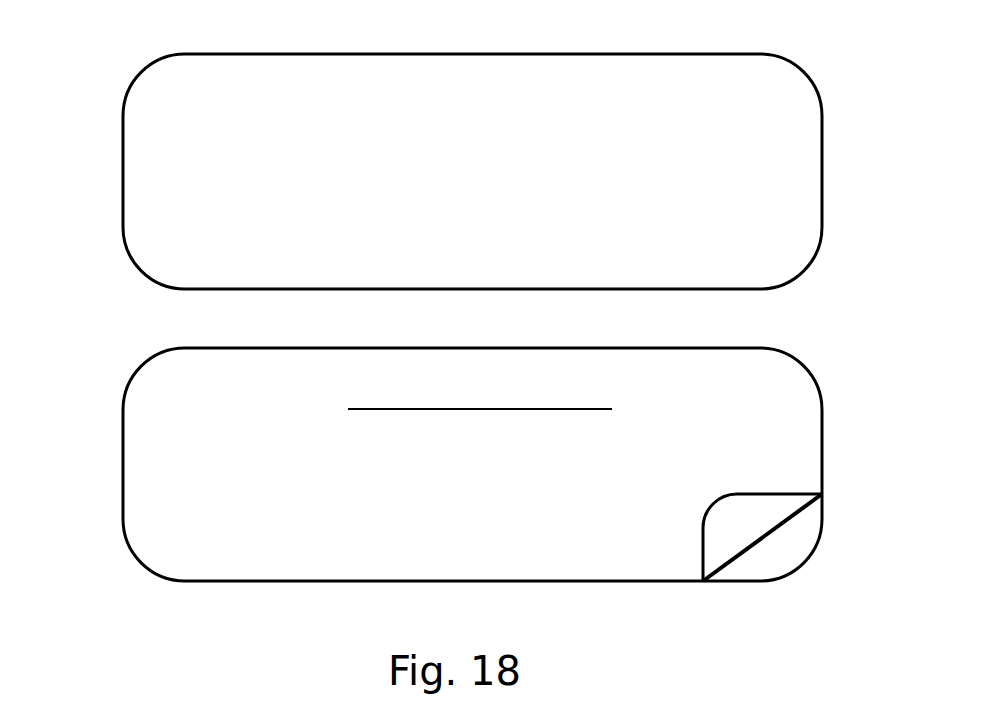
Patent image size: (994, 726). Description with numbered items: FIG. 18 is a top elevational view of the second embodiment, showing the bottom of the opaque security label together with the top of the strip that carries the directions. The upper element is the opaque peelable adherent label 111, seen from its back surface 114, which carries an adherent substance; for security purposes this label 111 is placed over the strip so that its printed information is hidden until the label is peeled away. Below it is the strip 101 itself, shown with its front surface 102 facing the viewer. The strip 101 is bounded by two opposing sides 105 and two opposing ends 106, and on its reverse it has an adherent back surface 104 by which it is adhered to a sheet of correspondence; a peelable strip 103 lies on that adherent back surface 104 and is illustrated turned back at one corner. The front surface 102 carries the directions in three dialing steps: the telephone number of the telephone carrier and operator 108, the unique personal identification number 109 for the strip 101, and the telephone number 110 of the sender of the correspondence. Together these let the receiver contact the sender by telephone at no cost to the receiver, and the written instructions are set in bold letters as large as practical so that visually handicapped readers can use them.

The strip 101 is at (147, 452).
The front surface 102 is at (803, 425).
The peelable strip 103 is at (723, 582).
The adherent back surface 104 is at (758, 512).
The opposing sides 105 is at (573, 582).
The opposing ends 106 is at (123, 508).
The telephone number of the telephone carrier and operator 108 is at (528, 419).
The unique personal identification number 109 is at (586, 476).
The telephone number of the sender 110 is at (658, 511).
The opaque peelable adherent label 111 is at (519, 162).
The back surface 114 is at (765, 95).